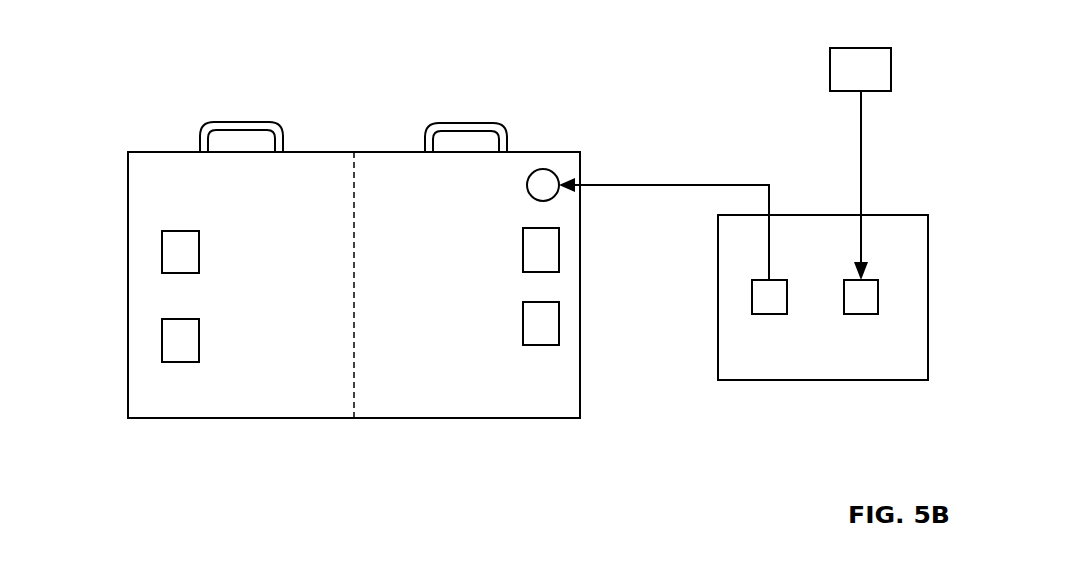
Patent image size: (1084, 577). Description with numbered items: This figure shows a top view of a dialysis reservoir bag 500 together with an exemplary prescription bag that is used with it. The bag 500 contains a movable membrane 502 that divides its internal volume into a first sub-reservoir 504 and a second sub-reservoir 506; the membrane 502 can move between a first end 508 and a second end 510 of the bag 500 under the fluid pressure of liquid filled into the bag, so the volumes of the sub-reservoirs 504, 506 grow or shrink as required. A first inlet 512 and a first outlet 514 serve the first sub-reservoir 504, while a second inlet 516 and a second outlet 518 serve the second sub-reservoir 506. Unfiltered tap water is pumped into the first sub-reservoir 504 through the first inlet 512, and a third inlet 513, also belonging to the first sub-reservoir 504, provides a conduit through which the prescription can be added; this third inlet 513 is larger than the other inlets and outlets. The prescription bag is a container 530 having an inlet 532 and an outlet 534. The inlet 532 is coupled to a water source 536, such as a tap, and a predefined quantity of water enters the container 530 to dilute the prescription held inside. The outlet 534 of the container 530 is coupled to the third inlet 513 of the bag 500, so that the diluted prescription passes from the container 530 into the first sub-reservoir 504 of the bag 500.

The bag 500 is at (138, 64).
The movable membrane 502 is at (354, 232).
The first sub-reservoir 504 is at (473, 405).
The second sub-reservoir 506 is at (247, 405).
The first end 508 is at (581, 283).
The second end 510 is at (128, 290).
The first inlet 512 is at (559, 248).
The third inlet 513 is at (546, 168).
The first outlet 514 is at (559, 325).
The second inlet 516 is at (162, 252).
The second outlet 518 is at (162, 340).
The container 530 is at (828, 363).
The inlet 532 is at (861, 314).
The outlet 534 is at (770, 314).
The water source 536 is at (830, 70).